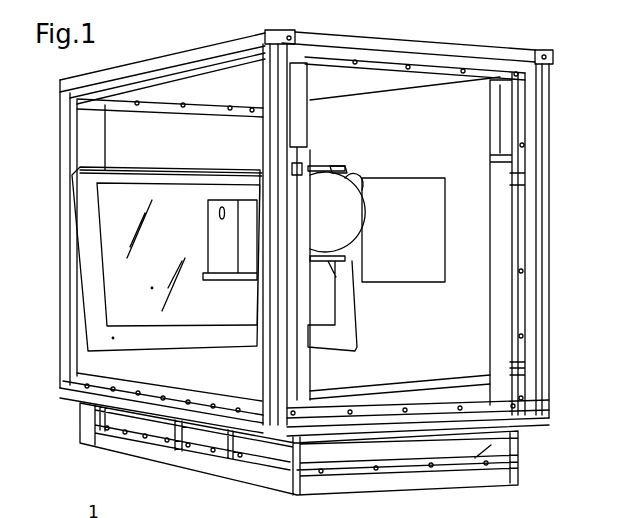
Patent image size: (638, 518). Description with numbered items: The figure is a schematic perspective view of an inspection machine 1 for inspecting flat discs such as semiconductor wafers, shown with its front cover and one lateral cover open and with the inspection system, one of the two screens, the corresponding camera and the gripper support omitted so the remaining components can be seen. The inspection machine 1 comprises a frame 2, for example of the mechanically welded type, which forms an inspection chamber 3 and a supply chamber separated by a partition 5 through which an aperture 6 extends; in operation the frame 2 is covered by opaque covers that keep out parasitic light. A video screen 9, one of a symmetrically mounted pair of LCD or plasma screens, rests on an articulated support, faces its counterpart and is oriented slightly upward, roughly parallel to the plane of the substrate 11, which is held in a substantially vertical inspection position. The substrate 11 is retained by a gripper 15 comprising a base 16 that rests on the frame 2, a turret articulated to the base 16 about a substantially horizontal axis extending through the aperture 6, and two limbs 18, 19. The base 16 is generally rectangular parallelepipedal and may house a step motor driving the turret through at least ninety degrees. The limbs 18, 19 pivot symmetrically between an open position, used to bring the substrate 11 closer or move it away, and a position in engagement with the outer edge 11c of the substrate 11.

The inspection machine 1 is at (544, 465).
The frame 2 is at (553, 358).
The inspection chamber 3 is at (181, 149).
The partition 5 is at (472, 302).
The aperture 6 is at (432, 270).
The video screen 9 is at (78, 297).
The substrate 11 is at (343, 224).
The outer edge of the substrate 11c is at (356, 177).
The gripper 15 is at (326, 160).
The base 16 is at (232, 253).
The limb 18 is at (338, 163).
The limb 19 is at (333, 278).